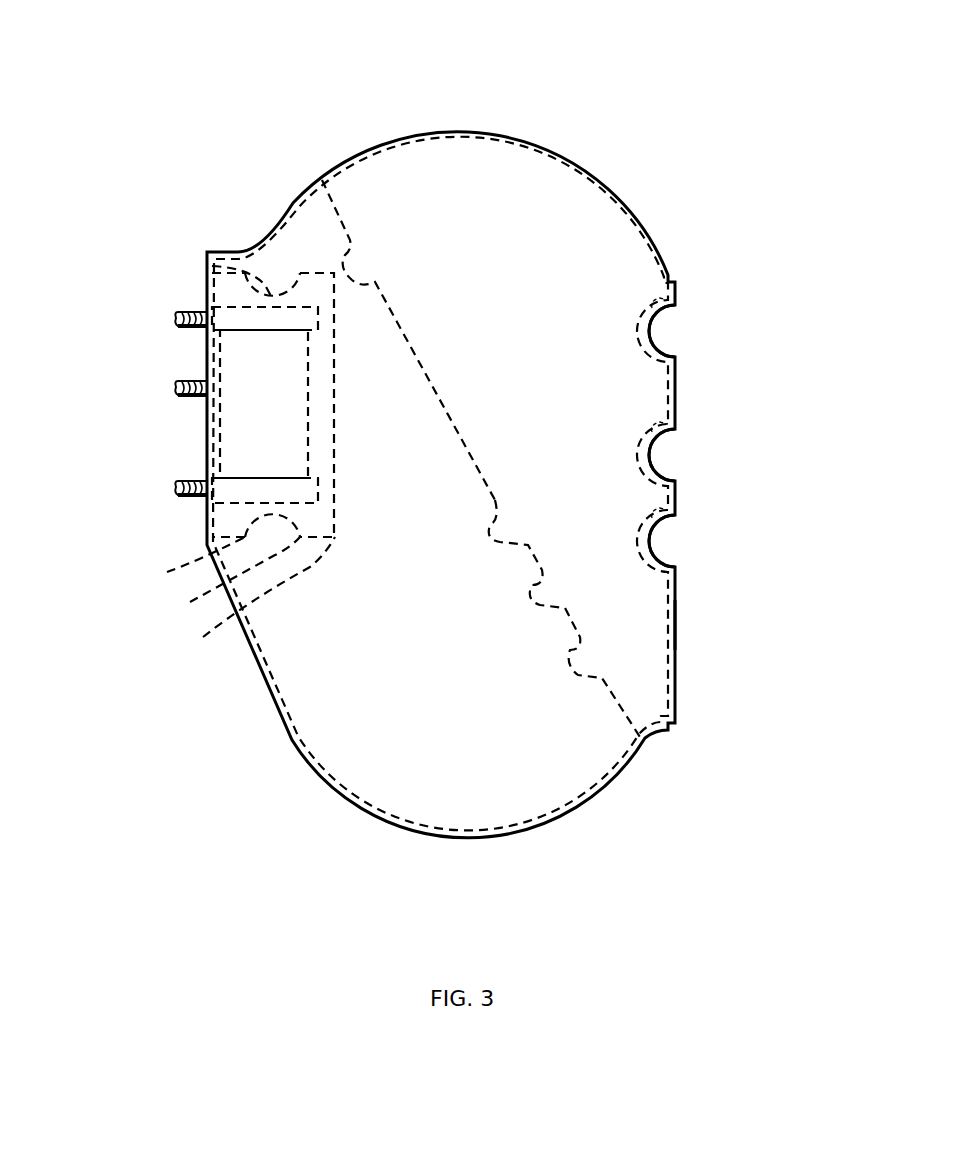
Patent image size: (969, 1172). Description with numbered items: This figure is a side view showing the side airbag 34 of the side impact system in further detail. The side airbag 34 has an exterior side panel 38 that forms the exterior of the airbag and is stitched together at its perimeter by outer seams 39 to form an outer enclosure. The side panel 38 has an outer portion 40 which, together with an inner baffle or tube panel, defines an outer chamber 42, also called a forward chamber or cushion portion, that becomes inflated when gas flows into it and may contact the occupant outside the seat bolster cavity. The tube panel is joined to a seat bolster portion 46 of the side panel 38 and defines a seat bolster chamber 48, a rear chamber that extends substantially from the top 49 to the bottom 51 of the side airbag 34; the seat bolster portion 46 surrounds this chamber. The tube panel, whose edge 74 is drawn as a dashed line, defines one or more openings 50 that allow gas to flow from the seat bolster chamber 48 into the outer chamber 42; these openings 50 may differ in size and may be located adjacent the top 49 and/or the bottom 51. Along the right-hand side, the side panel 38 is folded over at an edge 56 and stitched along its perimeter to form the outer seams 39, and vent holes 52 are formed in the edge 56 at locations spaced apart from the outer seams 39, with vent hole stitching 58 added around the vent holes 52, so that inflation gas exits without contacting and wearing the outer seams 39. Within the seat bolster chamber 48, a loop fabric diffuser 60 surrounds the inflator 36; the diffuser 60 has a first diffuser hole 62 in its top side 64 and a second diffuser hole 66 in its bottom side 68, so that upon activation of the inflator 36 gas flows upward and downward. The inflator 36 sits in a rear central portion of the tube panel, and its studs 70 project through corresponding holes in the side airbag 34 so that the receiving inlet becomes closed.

The side airbag 34 is at (586, 60).
The inflator 36 is at (240, 330).
The exterior side panel 38 is at (622, 758).
The outer seams 39 is at (487, 130).
The outer portion 40 is at (390, 178).
The outer chamber 42 is at (586, 240).
The seat bolster portion 46 is at (325, 770).
The seat bolster chamber 48 is at (298, 660).
The top 49 is at (300, 197).
The openings 50 is at (365, 283).
The bottom 51 is at (575, 810).
The vent holes 52 is at (655, 335).
The edge 56 is at (678, 622).
The vent hole stitching 58 is at (665, 305).
The diffuser 60 is at (215, 617).
The first diffuser hole 62 is at (207, 263).
The top side 64 is at (275, 218).
The second diffuser hole 66 is at (200, 560).
The bottom side 68 is at (235, 628).
The studs 70 is at (176, 316).
The edge of the tube panel 74 is at (440, 375).